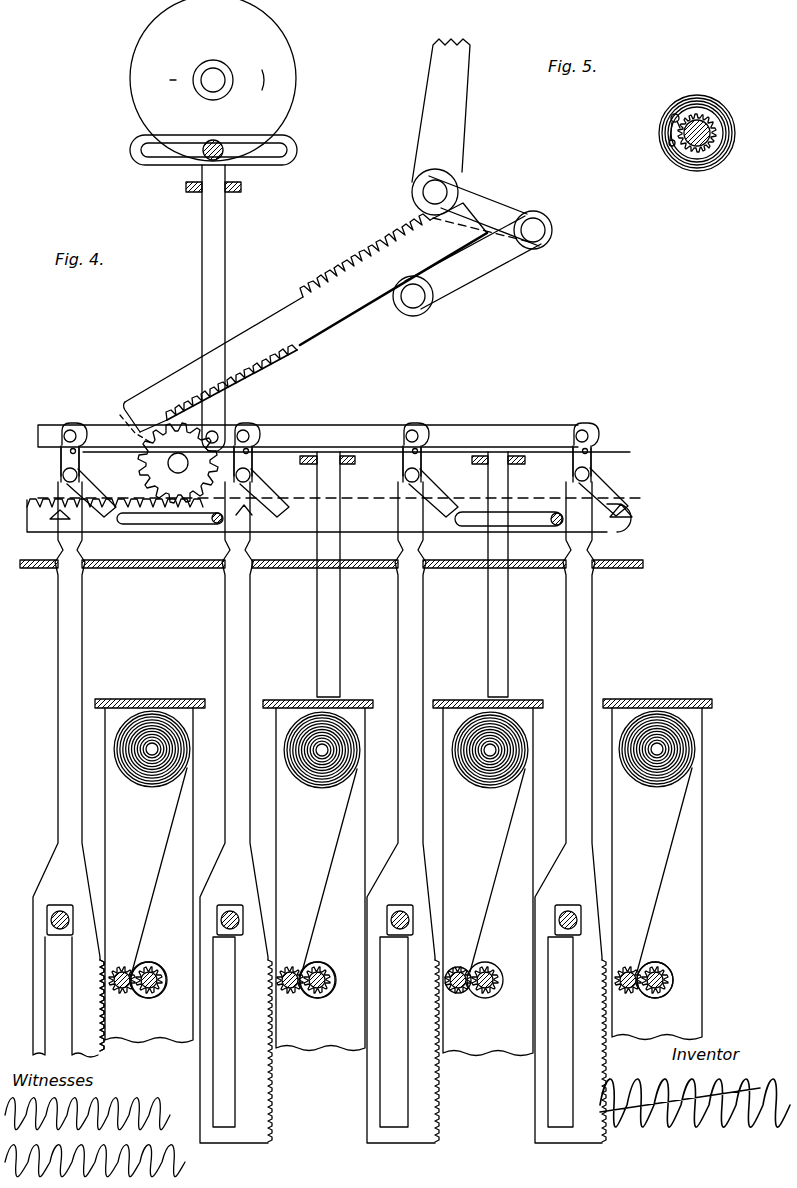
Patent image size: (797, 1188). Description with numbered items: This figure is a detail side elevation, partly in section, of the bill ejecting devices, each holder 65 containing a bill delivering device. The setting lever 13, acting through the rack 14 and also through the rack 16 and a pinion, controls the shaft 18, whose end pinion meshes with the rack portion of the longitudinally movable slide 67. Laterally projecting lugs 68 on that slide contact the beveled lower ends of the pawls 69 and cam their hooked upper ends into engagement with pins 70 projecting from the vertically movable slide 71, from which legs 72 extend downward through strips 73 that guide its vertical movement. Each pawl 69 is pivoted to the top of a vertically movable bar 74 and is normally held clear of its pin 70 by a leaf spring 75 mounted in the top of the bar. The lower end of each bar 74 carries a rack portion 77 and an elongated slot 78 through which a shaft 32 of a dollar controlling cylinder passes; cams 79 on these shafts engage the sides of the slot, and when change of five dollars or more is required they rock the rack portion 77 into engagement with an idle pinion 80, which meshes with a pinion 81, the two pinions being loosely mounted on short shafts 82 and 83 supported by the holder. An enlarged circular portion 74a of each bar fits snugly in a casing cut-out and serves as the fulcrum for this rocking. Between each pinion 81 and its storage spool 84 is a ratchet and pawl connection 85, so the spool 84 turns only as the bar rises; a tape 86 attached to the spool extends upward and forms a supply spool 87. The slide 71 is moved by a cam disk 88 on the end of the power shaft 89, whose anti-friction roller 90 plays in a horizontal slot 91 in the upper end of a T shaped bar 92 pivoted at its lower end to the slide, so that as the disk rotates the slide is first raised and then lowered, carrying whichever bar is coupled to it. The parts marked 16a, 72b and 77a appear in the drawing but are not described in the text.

In FIG. 4, the setting lever 13 is at (400, 116).
In FIG. 4, the rack 14 is at (350, 270).
In FIG. 4, the rack 16 is at (140, 440).
In FIG. 4, the rack teeth 16a is at (265, 375).
In FIG. 4, the shaft 18 is at (170, 420).
In FIG. 4, the shaft 32 is at (392, 927).
In FIG. 4, the holder 65 is at (708, 890).
In FIG. 4, the longitudinally movable slide 67 is at (358, 505).
In FIG. 4, the laterally projecting lug 68 is at (630, 510).
In FIG. 4, the pawl 69 is at (262, 505).
In FIG. 4, the pin 70 is at (70, 430).
In FIG. 4, the vertically movable slide 71 is at (316, 440).
In FIG. 4, the leg 72 is at (330, 633).
In FIG. 4, the rod 72b is at (403, 812).
In FIG. 4, the strip 73 is at (352, 455).
In FIG. 4, the vertically movable bar 74 is at (82, 647).
In FIG. 4, the enlarged circular portion 74a is at (592, 566).
In FIG. 4, the leaf spring 75 is at (62, 452).
In FIG. 4, the rack portion 77 is at (102, 1055).
In FIG. 4, the rack 77a is at (90, 500).
In FIG. 4, the elongated slot 78 is at (385, 1076).
In FIG. 4, the cam 79 is at (60, 912).
In FIG. 4, the idle pinion 80 is at (292, 993).
In FIG. 4, the pinion 81 is at (148, 997).
In FIG. 4, the short shaft 82 is at (459, 994).
In FIG. 4, the short shaft 83 is at (320, 997).
In FIG. 4, the storage spool 84 is at (655, 997).
In FIG. 5, the storage spool 84 is at (712, 152).
In FIG. 5, the ratchet and pawl connection 85 is at (669, 135).
In FIG. 4, the tape 86 is at (160, 852).
In FIG. 5, the tape 86 is at (665, 110).
In FIG. 4, the supply spool 87 is at (148, 778).
In FIG. 4, the cam disk 88 is at (132, 97).
In FIG. 4, the power shaft 89 is at (214, 80).
In FIG. 4, the anti-friction roller 90 is at (215, 142).
In FIG. 4, the horizontal slot 91 is at (160, 155).
In FIG. 4, the T shaped bar 92 is at (226, 296).